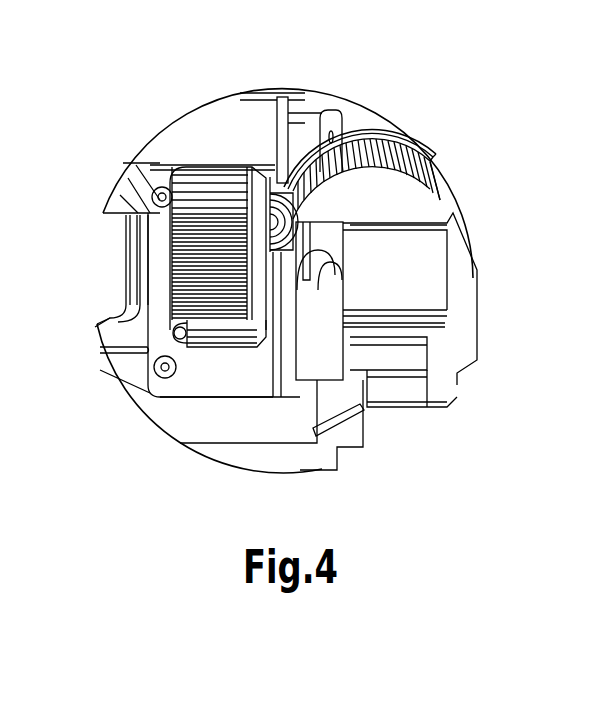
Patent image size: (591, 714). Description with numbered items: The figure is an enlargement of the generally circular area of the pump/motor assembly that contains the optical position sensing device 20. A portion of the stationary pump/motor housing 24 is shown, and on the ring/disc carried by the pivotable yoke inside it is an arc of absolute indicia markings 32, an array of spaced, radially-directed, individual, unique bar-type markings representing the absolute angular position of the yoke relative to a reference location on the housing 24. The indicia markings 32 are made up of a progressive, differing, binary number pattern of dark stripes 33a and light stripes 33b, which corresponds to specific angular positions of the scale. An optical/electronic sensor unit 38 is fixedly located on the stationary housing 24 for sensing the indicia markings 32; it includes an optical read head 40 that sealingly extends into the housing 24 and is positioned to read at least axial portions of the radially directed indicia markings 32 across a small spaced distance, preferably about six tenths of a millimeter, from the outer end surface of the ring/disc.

The optical position sensing device 20 is at (420, 462).
The stationary pump/motor housing 24 is at (463, 308).
The absolute indicia markings 32 is at (430, 160).
The dark stripes 33a is at (414, 150).
The light stripes 33b is at (395, 152).
The optical/electronic sensor unit 38 is at (224, 292).
The optical read head 40 is at (173, 243).